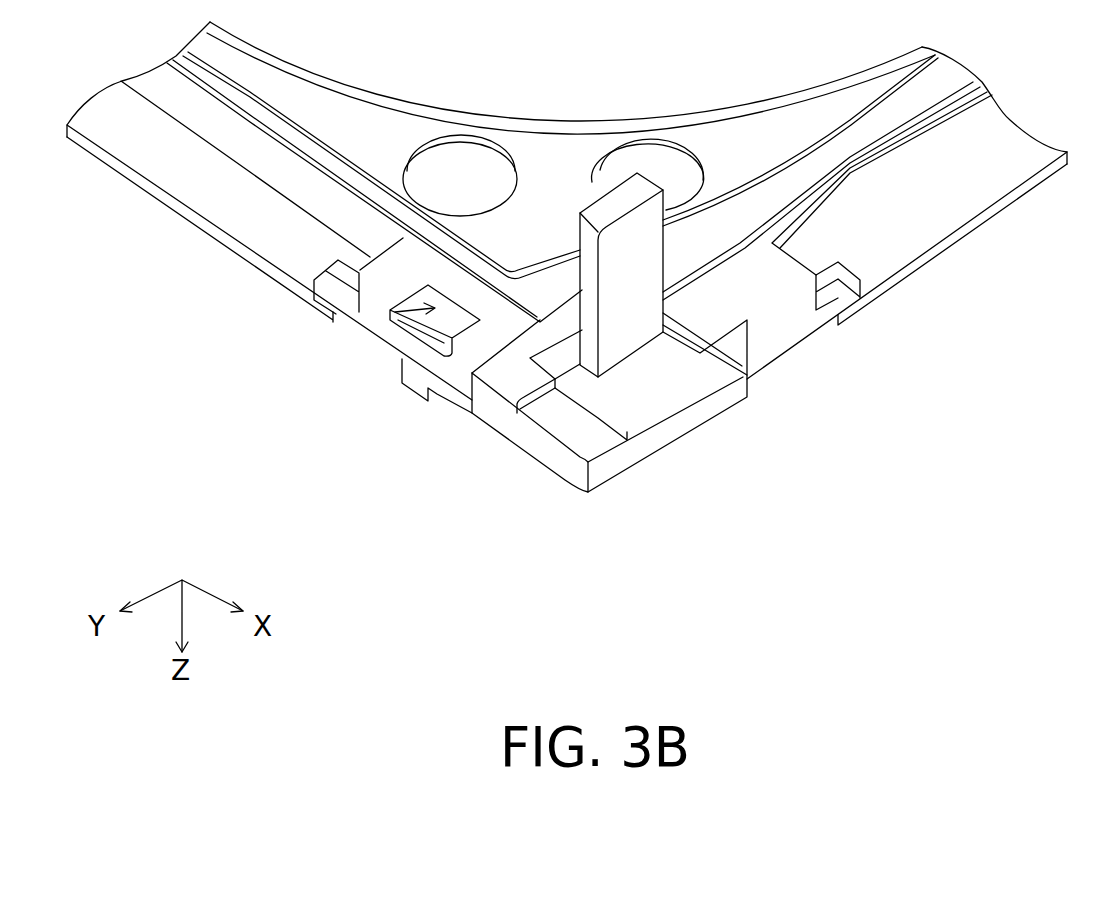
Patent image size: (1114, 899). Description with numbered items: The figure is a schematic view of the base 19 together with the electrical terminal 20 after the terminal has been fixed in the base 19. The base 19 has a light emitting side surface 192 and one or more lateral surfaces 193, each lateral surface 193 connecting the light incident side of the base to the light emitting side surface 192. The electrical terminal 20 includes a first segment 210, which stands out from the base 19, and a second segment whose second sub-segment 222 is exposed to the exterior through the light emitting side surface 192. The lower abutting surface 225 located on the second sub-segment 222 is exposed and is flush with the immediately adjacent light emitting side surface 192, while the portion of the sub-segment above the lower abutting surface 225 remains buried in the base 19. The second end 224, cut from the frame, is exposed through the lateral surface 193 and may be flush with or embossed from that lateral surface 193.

The base 19 is at (918, 216).
The light emitting side surface 192 is at (694, 386).
The lateral surface 193 is at (457, 390).
The electrical terminal 20 is at (739, 347).
The first segment 210 is at (622, 325).
The second sub-segment 222 is at (423, 348).
The second end 224 is at (344, 390).
The lower abutting surface 225 is at (395, 312).